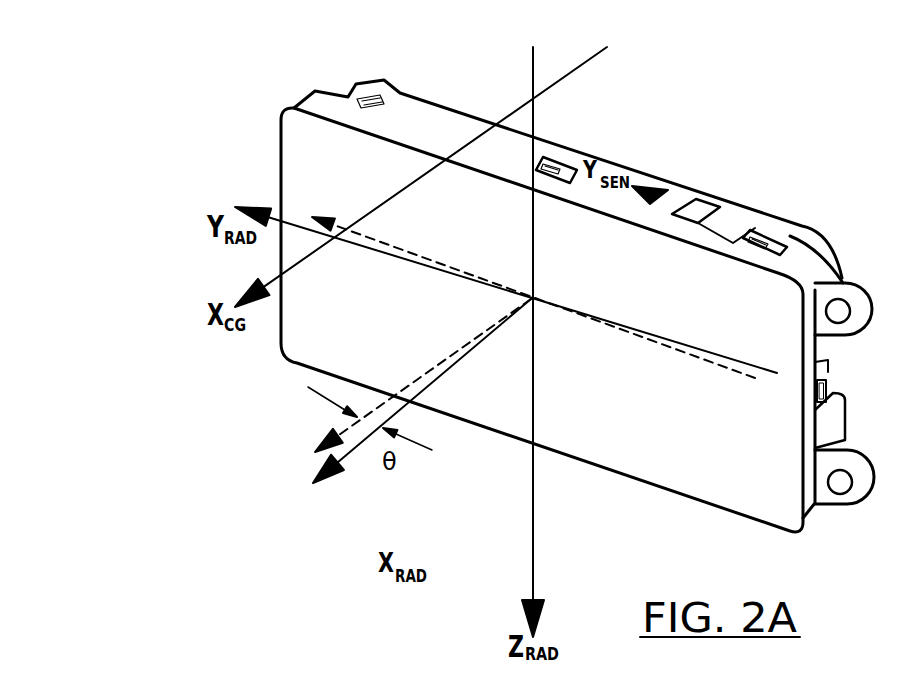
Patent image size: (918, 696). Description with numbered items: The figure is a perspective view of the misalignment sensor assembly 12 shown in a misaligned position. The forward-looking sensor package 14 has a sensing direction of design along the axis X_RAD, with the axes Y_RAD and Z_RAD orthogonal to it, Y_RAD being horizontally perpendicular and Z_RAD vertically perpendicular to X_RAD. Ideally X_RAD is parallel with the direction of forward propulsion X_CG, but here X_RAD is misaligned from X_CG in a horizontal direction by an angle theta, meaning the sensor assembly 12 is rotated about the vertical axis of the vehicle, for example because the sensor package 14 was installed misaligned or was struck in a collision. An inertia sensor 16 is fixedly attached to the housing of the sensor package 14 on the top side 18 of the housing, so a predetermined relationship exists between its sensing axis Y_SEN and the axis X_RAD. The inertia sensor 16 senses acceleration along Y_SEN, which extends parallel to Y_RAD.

The misalignment sensor assembly 12 is at (229, 132).
The forward-looking sensor package 14 is at (308, 143).
The inertia sensor 16 is at (695, 198).
The top side 18 is at (418, 120).